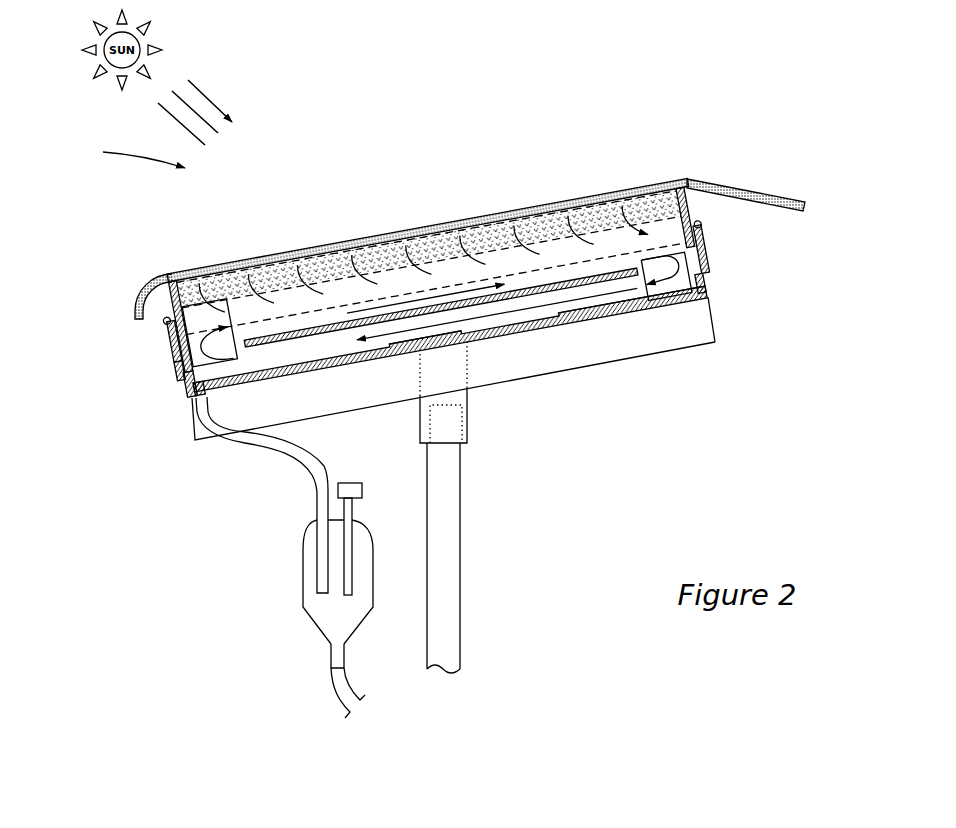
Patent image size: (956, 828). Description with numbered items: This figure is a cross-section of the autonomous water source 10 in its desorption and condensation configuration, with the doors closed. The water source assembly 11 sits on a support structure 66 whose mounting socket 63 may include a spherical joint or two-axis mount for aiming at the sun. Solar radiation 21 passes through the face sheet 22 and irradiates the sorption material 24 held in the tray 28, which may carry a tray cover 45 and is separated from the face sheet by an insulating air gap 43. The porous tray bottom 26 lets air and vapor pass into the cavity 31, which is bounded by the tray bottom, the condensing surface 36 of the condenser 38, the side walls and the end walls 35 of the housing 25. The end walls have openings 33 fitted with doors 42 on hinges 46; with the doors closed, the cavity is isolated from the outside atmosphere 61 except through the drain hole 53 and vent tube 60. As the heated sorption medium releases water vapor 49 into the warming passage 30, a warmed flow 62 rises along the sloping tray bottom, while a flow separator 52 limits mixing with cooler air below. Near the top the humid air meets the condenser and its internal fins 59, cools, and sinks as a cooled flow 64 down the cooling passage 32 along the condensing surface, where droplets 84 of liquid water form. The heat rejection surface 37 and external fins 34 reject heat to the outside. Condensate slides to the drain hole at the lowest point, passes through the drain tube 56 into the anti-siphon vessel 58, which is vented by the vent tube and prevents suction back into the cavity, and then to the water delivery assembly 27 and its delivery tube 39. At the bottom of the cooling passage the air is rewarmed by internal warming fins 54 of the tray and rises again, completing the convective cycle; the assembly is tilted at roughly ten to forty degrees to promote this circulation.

The autonomous water source 10 is at (125, 155).
The water source assembly 11 is at (603, 188).
The solar radiation 21 is at (200, 92).
The face sheet 22 is at (243, 278).
The sorption material 24 is at (380, 281).
The housing 25 is at (705, 206).
The tray bottom 26 is at (420, 255).
The water delivery assembly 27 is at (348, 675).
The tray 28 is at (303, 267).
The warming passage 30 is at (333, 295).
The cavity 31 is at (312, 375).
The cooling passage 32 is at (518, 322).
The openings 33 is at (187, 360).
The external fins 34 is at (577, 328).
The end walls 35 is at (700, 205).
The condensing surface 36 is at (670, 308).
The heat rejection surface 37 is at (627, 317).
The condenser 38 is at (692, 312).
The delivery tube 39 is at (337, 686).
The doors 42 is at (712, 258).
The air gap 43 is at (573, 284).
The tray cover 45 is at (437, 270).
The hinges 46 is at (702, 225).
The water vapor 49 is at (225, 312).
The flow separator 52 is at (590, 250).
The drain hole 53 is at (190, 423).
The internal warming fins 54 is at (173, 352).
The drain tube 56 is at (274, 457).
The anti-siphon vessel 58 is at (303, 600).
The internal fins 59 is at (690, 350).
The vent tube 60 is at (356, 512).
The outside atmosphere 61 is at (112, 582).
The warmed flow 62 is at (490, 218).
The mounting socket 63 is at (468, 444).
The cooled flow 64 is at (470, 382).
The support structure 66 is at (462, 632).
The droplets 84 is at (277, 365).